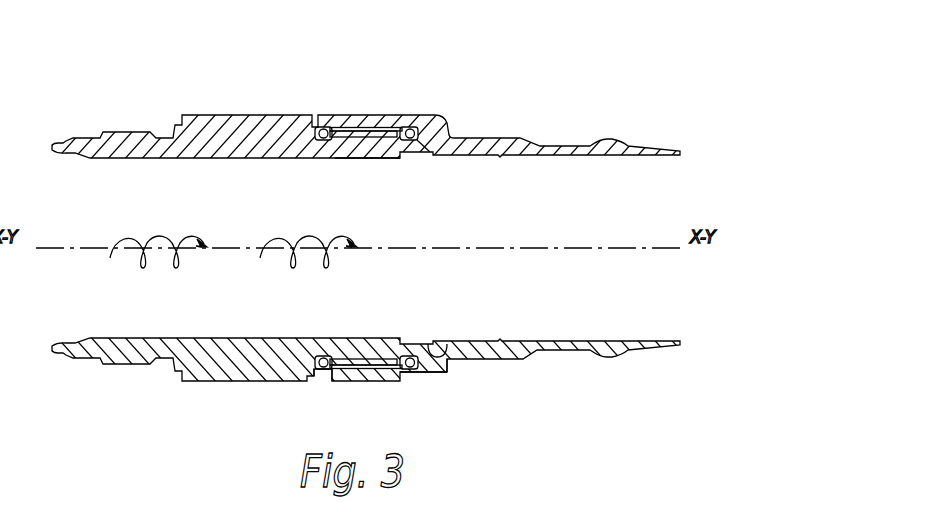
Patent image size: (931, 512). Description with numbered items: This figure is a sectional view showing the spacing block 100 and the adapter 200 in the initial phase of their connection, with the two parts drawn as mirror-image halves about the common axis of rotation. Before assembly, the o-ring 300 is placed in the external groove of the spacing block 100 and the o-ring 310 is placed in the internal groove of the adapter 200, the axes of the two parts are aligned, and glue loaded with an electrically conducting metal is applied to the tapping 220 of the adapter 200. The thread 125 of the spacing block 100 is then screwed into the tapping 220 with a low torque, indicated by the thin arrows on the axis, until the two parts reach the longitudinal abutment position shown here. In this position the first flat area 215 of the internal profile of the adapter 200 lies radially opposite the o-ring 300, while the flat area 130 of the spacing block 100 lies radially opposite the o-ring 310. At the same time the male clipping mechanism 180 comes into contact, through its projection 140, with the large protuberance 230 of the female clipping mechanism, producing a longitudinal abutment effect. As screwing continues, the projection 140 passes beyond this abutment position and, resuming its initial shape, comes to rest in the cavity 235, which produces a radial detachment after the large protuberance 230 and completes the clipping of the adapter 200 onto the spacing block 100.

The spacing block 100 is at (111, 84).
The adapter 200 is at (558, 82).
The o-ring 300 is at (316, 126).
The thread 125 is at (366, 130).
The tapping 220 is at (371, 158).
The o-ring 310 is at (420, 152).
The male clipping mechanism 180 is at (428, 310).
The flat area 130 is at (408, 341).
The projection 140 is at (434, 343).
The first flat area 215 is at (343, 376).
The large protuberance 230 is at (433, 373).
The cavity 235 is at (448, 371).